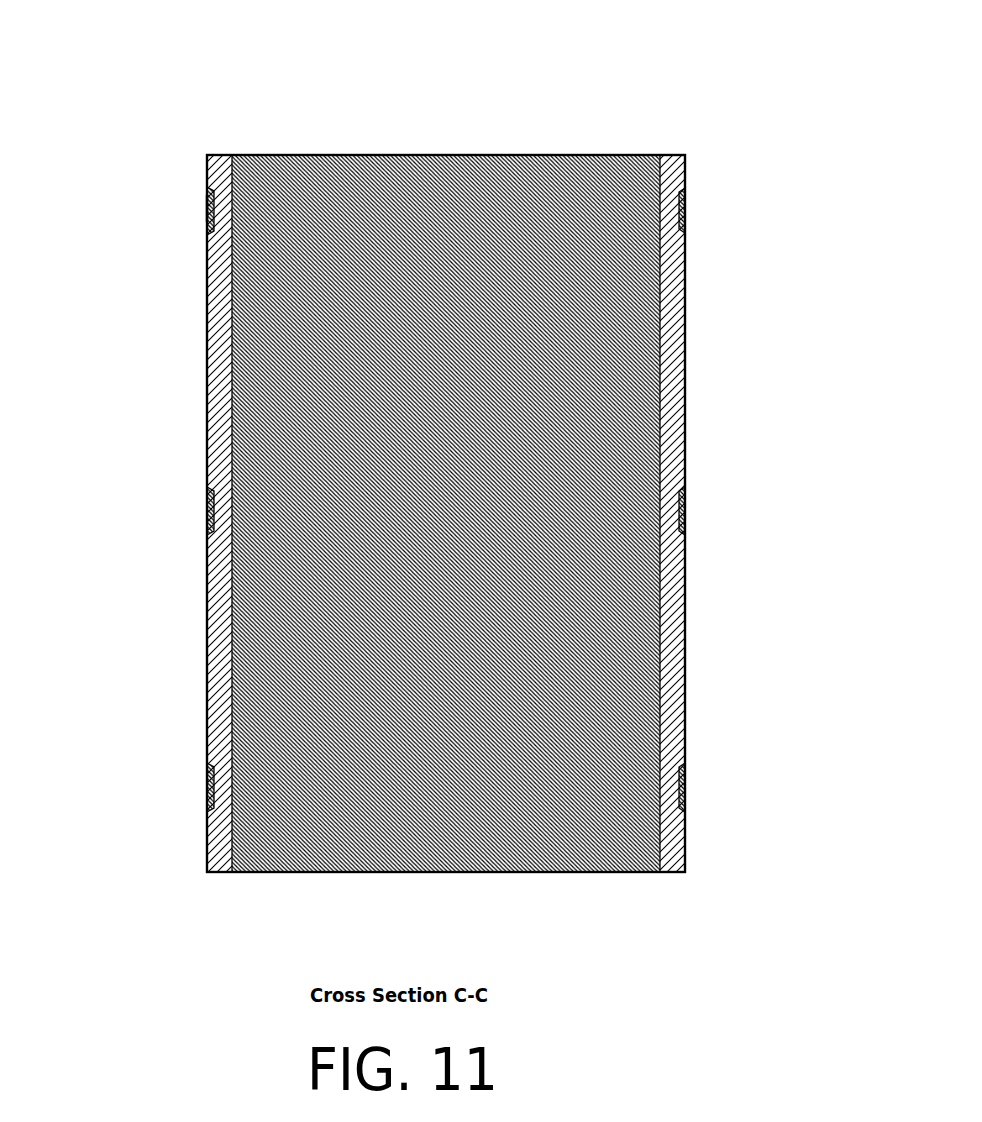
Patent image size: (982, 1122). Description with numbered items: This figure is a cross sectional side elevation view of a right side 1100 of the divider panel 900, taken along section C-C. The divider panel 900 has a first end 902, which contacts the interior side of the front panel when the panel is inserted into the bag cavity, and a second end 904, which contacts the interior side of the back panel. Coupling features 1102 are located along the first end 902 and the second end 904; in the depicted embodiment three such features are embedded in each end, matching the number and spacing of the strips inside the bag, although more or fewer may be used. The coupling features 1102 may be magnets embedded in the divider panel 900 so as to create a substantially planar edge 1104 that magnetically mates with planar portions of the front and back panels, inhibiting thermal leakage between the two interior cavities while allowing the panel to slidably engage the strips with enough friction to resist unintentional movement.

The right side of the divider panel 1100 is at (146, 30).
The divider panel 900 is at (407, 155).
The first end 902 is at (207, 400).
The second end 904 is at (686, 636).
The coupling features 1102 is at (692, 468).
The substantially planar edge 1104 is at (186, 209).